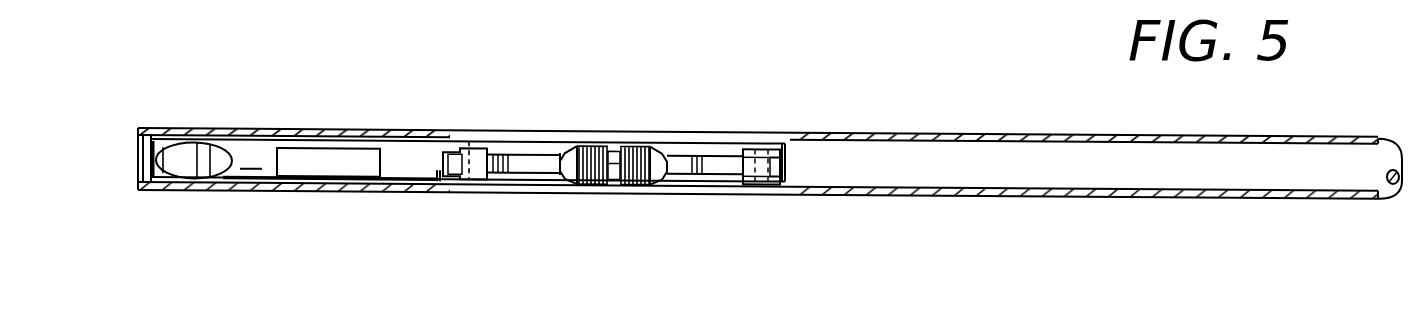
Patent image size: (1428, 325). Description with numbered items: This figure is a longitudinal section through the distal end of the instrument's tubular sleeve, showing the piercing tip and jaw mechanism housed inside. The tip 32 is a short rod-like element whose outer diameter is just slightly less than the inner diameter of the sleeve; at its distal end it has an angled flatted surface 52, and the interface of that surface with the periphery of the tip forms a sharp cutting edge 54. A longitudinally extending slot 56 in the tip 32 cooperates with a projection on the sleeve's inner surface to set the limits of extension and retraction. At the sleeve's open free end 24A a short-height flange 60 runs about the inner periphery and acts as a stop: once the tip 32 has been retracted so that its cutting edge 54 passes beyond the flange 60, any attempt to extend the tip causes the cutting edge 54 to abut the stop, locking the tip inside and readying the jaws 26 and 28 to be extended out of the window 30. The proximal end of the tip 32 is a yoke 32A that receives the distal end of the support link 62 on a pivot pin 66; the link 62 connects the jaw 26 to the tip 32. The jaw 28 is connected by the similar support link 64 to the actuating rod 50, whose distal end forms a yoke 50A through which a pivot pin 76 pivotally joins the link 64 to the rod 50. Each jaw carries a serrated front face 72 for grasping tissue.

The open free end 24A is at (138, 169).
The jaw 26 is at (585, 186).
The jaw 28 is at (638, 186).
The window 30 is at (497, 132).
The tip 32 is at (252, 167).
The yoke 32A is at (447, 178).
The actuating rod 50 is at (962, 154).
The yoke 50A is at (782, 152).
The angled flatted surface 52 is at (188, 152).
The cutting edge 54 is at (155, 180).
The slot 56 is at (345, 158).
The flange 60 is at (140, 149).
The support link 62 is at (513, 160).
The support link 64 is at (710, 170).
The pivot pin 66 is at (469, 139).
The front face 72 is at (648, 145).
The pivot pin 76 is at (760, 144).